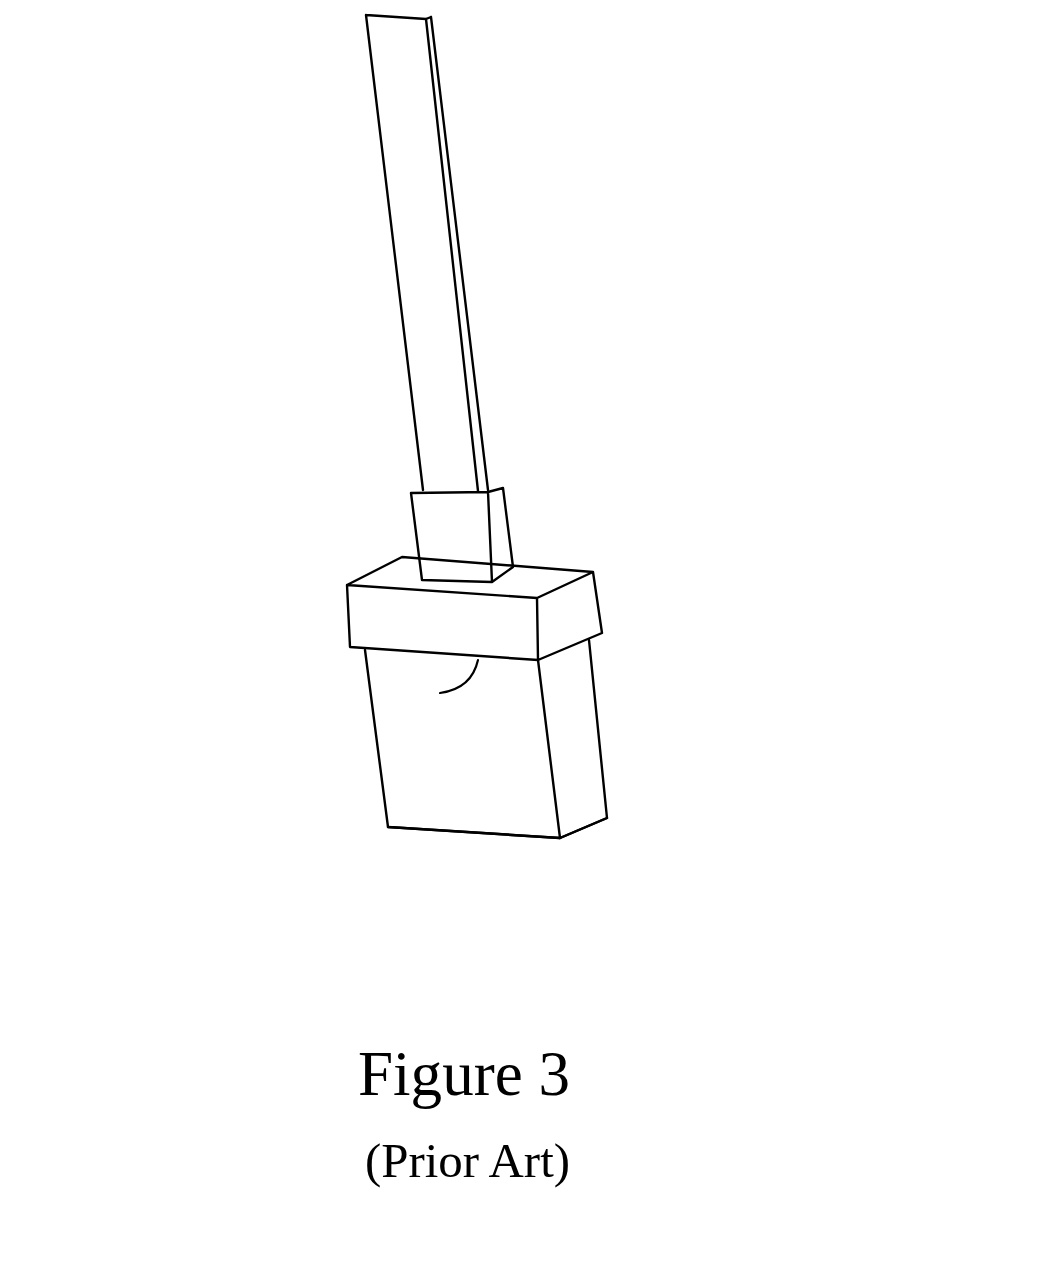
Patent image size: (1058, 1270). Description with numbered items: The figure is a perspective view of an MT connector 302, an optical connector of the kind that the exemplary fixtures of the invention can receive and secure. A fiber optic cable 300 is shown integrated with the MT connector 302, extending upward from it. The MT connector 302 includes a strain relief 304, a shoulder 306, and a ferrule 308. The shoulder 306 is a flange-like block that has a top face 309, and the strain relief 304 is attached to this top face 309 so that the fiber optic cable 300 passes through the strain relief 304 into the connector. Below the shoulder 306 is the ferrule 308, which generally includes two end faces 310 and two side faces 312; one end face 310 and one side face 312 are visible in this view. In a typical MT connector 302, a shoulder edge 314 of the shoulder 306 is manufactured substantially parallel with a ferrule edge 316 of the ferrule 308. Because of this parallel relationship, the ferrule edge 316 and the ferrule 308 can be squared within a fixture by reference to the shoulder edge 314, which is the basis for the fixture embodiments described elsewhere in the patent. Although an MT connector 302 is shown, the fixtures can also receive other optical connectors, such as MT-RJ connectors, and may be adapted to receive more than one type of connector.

The fiber optic cable 300 is at (692, 77).
The MT connector 302 is at (808, 362).
The strain relief 304 is at (432, 523).
The shoulder 306 is at (373, 608).
The ferrule 308 is at (598, 713).
The top face 309 is at (532, 582).
The end faces 310 is at (430, 752).
The side faces 312 is at (578, 771).
The shoulder edge 314 is at (237, 693).
The ferrule edge 316 is at (503, 837).